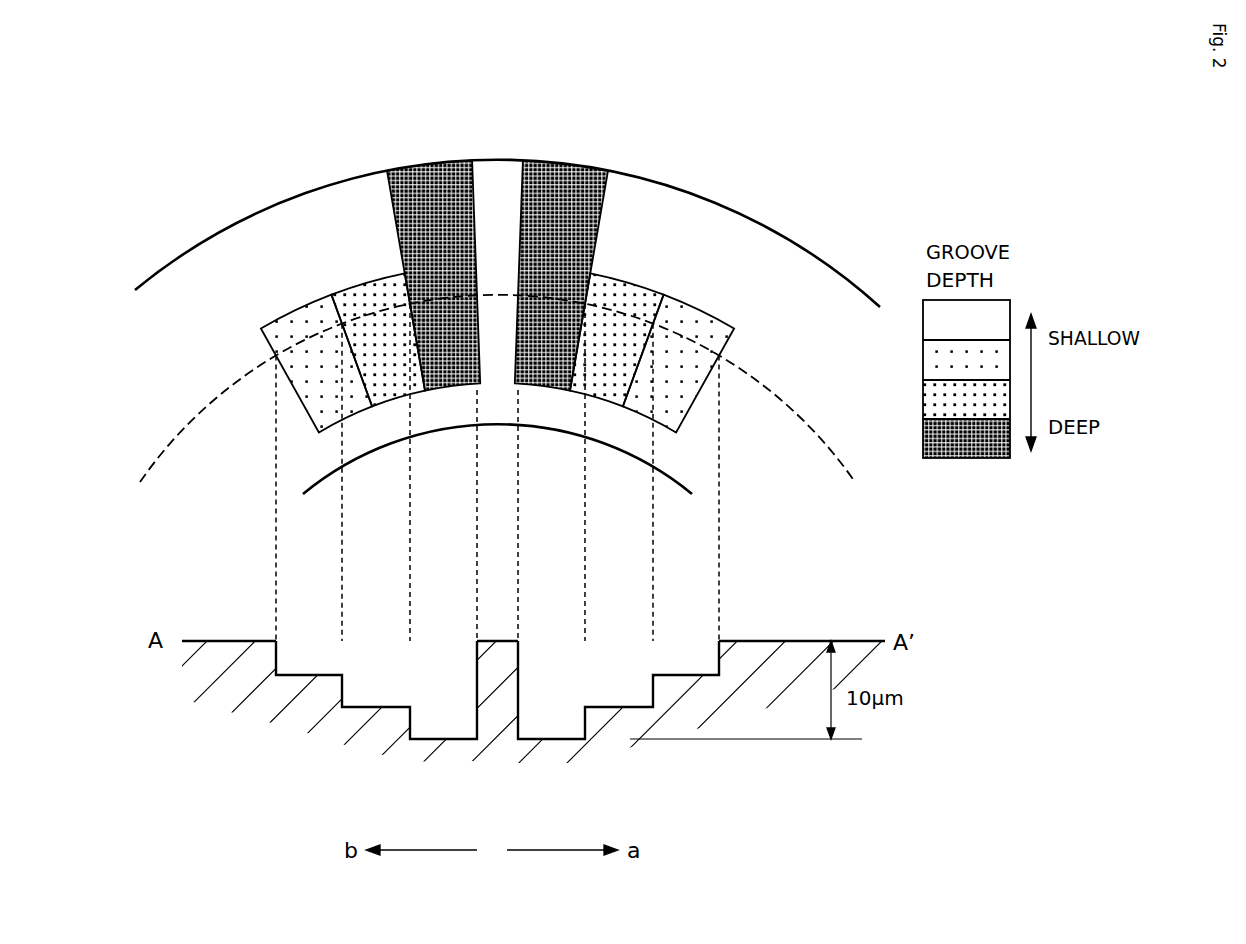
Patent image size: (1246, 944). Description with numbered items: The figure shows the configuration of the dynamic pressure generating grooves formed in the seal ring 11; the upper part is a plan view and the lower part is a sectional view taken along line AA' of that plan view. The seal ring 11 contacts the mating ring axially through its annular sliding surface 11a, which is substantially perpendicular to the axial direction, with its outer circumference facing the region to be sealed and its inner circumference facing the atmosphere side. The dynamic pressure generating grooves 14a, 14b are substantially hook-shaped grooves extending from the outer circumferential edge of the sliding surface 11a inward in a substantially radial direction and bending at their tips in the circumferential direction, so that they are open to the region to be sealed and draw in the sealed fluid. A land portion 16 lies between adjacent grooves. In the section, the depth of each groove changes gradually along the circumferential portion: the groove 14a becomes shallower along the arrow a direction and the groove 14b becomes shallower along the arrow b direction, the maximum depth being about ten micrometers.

The seal ring 11 is at (500, 294).
The sliding surface 11a is at (687, 208).
The dynamic pressure generating groove 14a is at (570, 162).
The dynamic pressure generating groove 14b is at (428, 163).
The land portion 16 is at (218, 640).